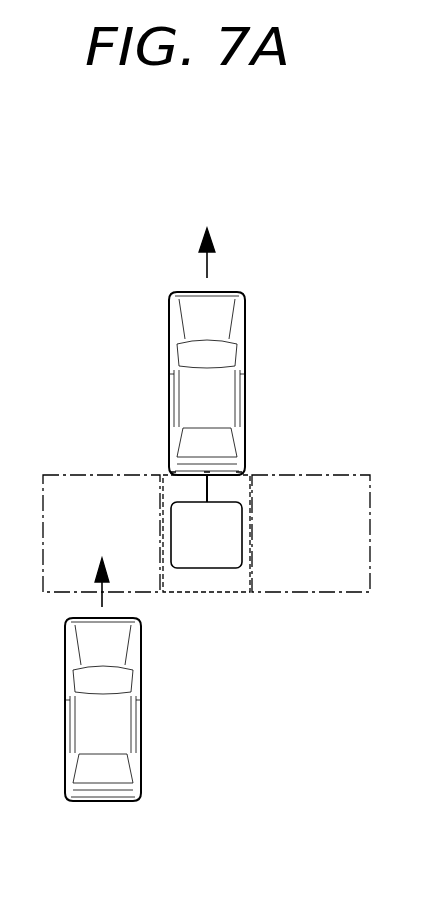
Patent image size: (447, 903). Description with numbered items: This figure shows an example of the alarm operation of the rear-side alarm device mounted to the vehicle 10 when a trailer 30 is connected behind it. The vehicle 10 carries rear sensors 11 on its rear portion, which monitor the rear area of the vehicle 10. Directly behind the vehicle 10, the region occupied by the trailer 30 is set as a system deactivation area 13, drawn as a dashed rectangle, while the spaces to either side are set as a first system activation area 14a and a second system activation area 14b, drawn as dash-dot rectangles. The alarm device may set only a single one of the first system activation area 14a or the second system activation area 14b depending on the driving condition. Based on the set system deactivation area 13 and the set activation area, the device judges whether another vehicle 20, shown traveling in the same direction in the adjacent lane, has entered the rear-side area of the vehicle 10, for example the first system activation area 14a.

The vehicle 10 is at (245, 341).
The rear sensors 11 is at (238, 458).
The system deactivation area 13 is at (232, 592).
The first system activation area 14a is at (148, 595).
The second system activation area 14b is at (312, 592).
The another vehicle 20 is at (100, 802).
The trailer 30 is at (195, 568).